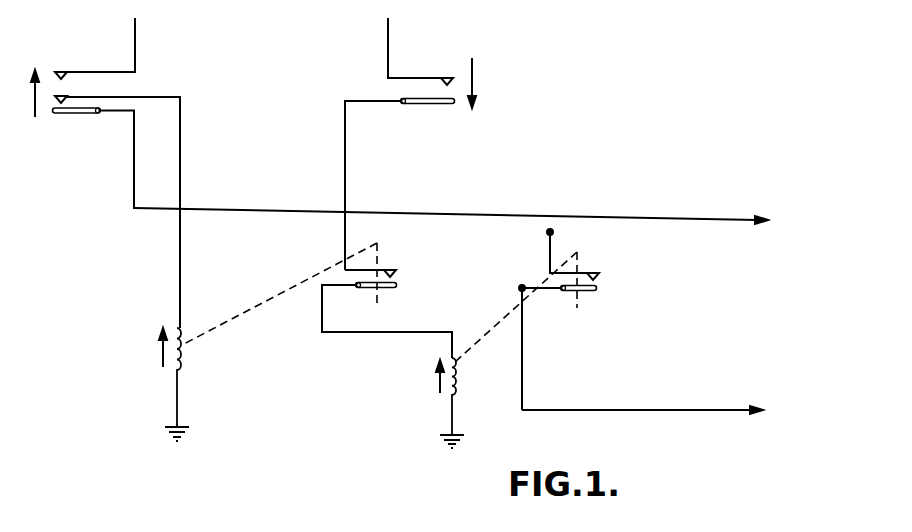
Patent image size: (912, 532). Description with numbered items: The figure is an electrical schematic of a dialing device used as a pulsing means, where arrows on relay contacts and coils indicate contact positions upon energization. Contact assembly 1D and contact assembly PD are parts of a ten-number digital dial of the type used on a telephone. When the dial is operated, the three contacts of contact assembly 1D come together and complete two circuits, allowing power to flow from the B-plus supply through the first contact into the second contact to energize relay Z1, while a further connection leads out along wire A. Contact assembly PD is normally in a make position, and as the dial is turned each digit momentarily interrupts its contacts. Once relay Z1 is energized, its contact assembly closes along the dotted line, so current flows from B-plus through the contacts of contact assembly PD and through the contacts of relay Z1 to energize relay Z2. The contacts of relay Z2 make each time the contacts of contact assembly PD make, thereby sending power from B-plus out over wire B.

The contact assembly ID 1D is at (105, 171).
The contact assembly PD is at (410, 142).
The relay Z1 is at (305, 342).
The relay Z2 is at (535, 338).
The wire A is at (498, 219).
The wire B is at (687, 411).